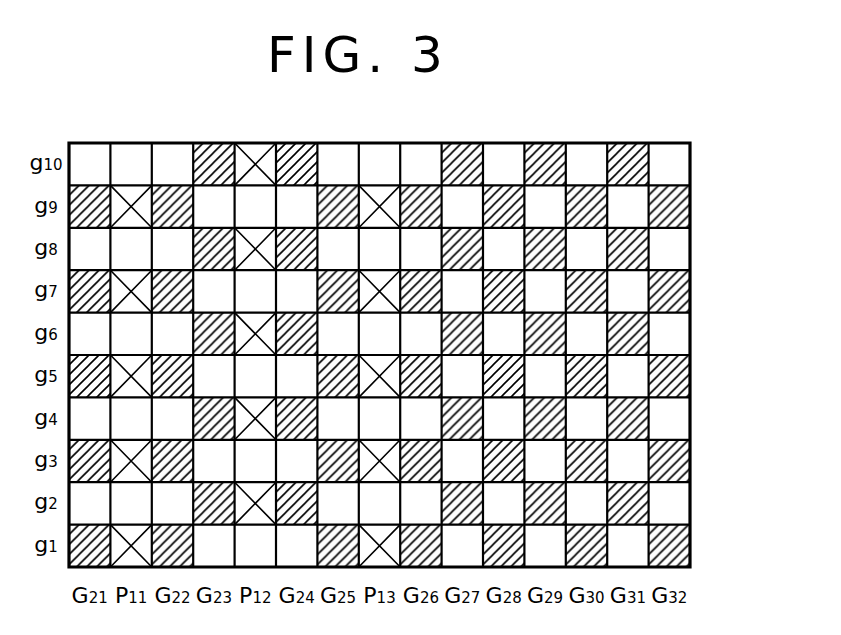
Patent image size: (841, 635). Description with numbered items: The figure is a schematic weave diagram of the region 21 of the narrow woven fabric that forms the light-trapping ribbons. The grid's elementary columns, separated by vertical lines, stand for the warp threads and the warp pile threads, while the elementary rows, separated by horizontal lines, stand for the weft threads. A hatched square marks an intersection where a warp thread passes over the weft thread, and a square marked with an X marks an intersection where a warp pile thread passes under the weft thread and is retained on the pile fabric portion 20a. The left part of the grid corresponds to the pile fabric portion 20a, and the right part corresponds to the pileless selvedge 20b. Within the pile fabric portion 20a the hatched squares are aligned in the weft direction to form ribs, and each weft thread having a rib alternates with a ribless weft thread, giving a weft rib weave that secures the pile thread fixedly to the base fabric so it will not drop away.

The region 21 is at (425, 339).
The pile fabric portion 20a is at (441, 127).
The pileless selvedge 20b is at (690, 127).